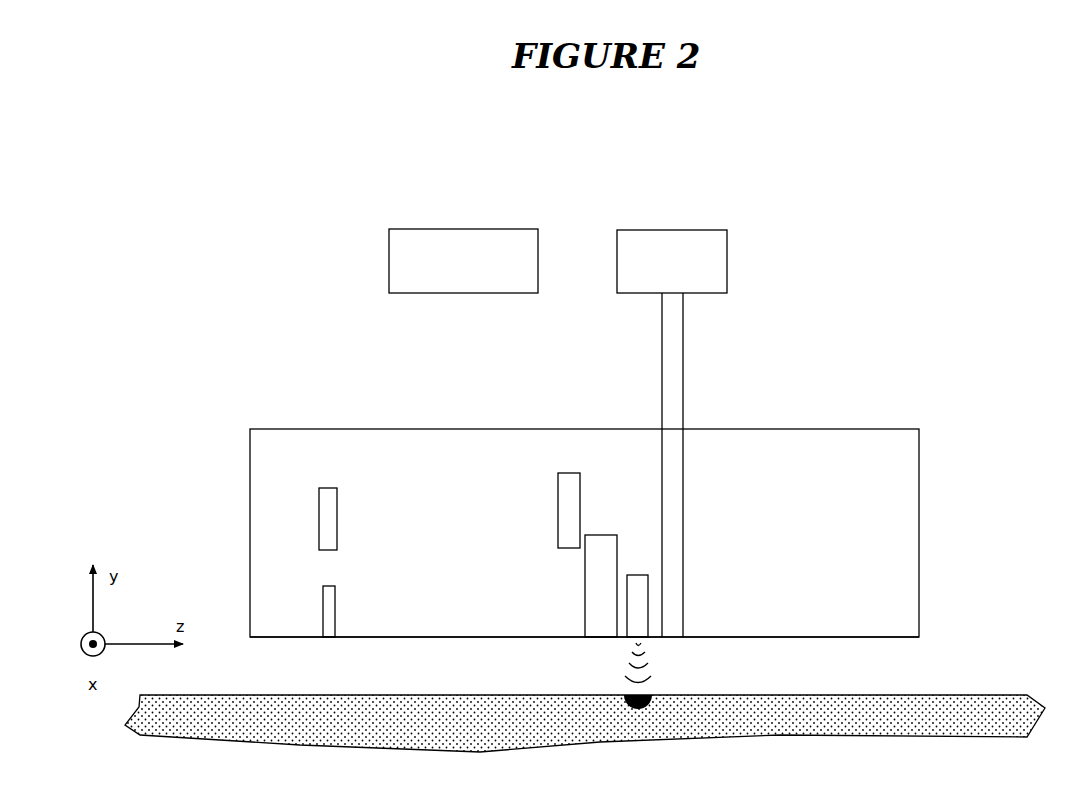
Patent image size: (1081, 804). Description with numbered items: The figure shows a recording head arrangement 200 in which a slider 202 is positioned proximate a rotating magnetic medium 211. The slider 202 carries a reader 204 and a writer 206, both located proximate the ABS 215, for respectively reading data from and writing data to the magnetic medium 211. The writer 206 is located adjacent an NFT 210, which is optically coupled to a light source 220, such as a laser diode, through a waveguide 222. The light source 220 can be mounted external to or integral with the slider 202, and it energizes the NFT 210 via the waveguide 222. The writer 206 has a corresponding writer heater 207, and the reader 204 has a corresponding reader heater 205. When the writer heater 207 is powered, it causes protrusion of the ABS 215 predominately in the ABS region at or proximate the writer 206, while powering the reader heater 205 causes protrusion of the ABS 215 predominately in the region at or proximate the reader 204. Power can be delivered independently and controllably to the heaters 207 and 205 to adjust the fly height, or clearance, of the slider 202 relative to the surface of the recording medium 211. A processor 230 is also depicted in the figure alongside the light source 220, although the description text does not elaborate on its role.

The recording head arrangement 200 is at (278, 135).
The slider 202 is at (944, 404).
The reader 204 is at (335, 612).
The reader heater 205 is at (337, 519).
The writer 206 is at (585, 594).
The writer heater 207 is at (558, 519).
The NFT 210 is at (638, 575).
The magnetic medium 211 is at (978, 695).
The ABS 215 is at (787, 637).
The light source 220 is at (727, 253).
The waveguide 222 is at (683, 363).
The processor 230 is at (389, 258).